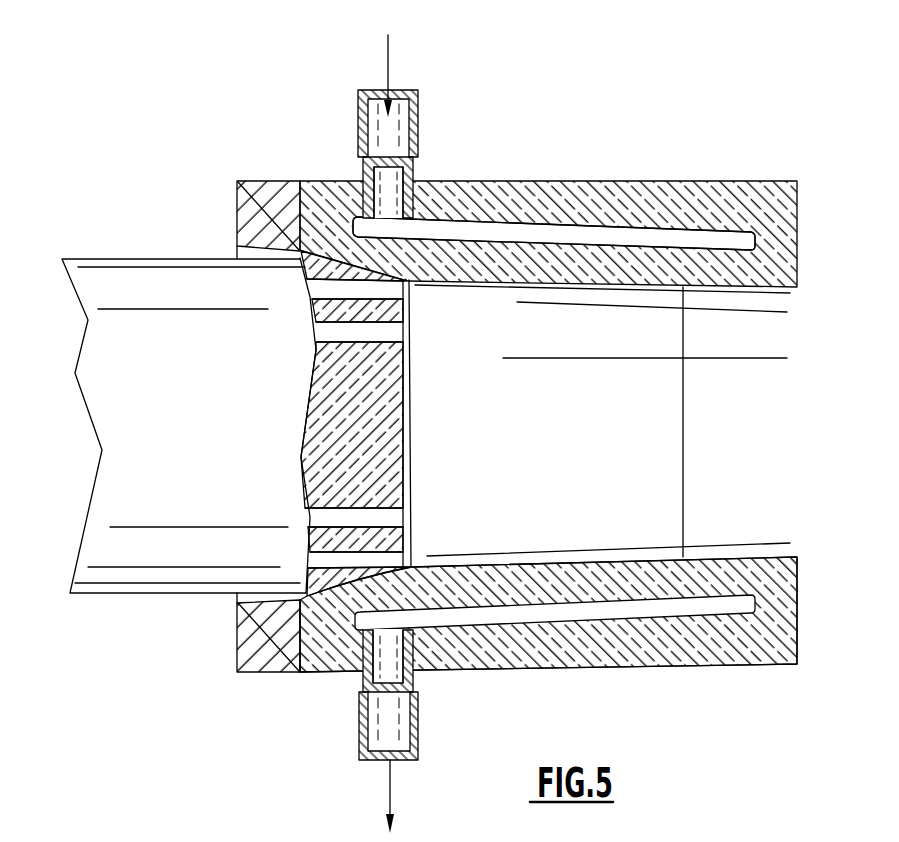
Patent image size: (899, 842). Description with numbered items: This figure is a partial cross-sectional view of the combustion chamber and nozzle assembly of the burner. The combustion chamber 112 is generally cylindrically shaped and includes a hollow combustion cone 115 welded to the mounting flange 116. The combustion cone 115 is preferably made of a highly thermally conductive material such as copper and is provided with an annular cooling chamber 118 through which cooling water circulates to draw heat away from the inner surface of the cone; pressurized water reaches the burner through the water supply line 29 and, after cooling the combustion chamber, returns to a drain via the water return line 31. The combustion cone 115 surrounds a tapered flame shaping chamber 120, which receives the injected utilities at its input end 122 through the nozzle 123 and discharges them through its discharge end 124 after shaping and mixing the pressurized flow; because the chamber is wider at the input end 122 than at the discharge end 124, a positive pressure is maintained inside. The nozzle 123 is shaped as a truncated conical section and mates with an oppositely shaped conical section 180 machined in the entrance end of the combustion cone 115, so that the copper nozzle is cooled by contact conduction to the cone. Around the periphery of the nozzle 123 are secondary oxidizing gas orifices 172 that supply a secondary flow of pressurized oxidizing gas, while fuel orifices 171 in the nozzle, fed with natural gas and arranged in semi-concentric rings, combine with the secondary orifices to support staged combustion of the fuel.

The water supply line 29 is at (390, 60).
The water return line 31 is at (392, 799).
The combustion chamber 112 is at (664, 178).
The combustion cone 115 is at (588, 664).
The mounting flange 116 is at (276, 672).
The annular cooling chamber 118 is at (725, 242).
The flame shaping chamber 120 is at (640, 348).
The input end 122 is at (412, 567).
The nozzle 123 is at (402, 423).
The discharge end 124 is at (777, 289).
The fuel orifices 171 is at (392, 332).
The secondary oxidizing gas orifices 172 is at (405, 293).
The conical section 180 is at (380, 274).